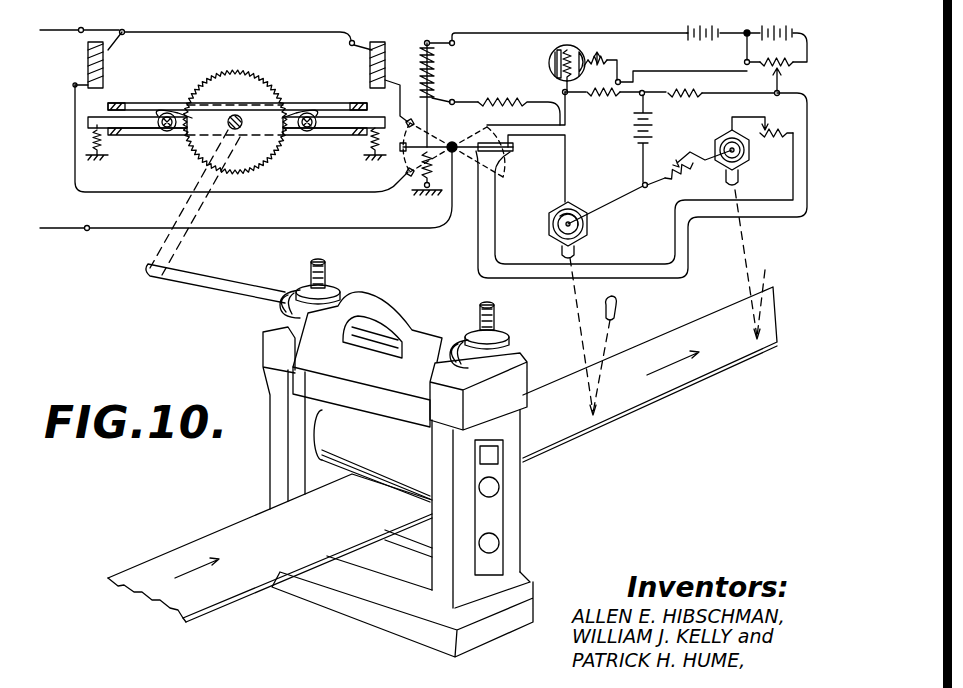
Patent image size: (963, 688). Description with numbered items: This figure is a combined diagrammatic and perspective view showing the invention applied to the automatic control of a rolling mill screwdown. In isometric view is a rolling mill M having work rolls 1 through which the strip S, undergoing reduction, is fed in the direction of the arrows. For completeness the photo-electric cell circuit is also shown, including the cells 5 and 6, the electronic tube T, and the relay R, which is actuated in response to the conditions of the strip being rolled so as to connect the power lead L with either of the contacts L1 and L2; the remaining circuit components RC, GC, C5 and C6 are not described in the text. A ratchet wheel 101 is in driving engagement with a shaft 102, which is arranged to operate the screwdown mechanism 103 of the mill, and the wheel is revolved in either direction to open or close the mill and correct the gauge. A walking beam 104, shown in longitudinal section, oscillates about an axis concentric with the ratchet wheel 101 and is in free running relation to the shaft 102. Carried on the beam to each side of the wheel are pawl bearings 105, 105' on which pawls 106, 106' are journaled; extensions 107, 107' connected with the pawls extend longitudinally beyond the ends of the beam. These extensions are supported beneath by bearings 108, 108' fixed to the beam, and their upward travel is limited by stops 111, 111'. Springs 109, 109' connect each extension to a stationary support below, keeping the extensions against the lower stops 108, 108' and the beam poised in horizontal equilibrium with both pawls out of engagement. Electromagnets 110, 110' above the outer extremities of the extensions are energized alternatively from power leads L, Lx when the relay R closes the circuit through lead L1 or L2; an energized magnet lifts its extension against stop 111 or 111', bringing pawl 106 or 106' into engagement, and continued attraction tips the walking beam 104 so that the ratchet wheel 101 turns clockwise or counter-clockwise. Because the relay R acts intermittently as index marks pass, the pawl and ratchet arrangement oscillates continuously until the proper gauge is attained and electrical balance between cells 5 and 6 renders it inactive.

The power lead Lx is at (78, 34).
The power lead L is at (246, 203).
The electromagnet 110 is at (115, 60).
The electromagnet 110' is at (381, 69).
The walking beam 104 is at (183, 140).
The bearing or stop 111 is at (128, 96).
The bearing or stop 111' is at (348, 96).
The pawl extension 107 is at (137, 144).
The pawl extension 107' is at (334, 144).
The bearing 108 is at (191, 160).
The bearing 108' is at (325, 160).
The ratchet wheel 101 is at (240, 110).
The shaft 102 is at (238, 130).
The pawl bearing 105 is at (166, 97).
The pawl bearing 105' is at (314, 97).
The pawl 106 is at (186, 80).
The pawl 106' is at (293, 80).
The spring 109 is at (75, 142).
The spring 109' is at (354, 177).
The relay R is at (549, 106).
The contact L1 is at (424, 116).
The contact L2 is at (408, 178).
The electronic tube T is at (553, 55).
The resistance-capacity network RC is at (721, 61).
The grid battery GC is at (634, 104).
The variable capacitor C5 is at (596, 198).
The cell 5 is at (583, 240).
The variable capacitor C6 is at (720, 151).
The cell 6 is at (746, 166).
The rolling mill M is at (515, 512).
The screwdown mechanism 103 is at (338, 290).
The work rolls 1 is at (374, 440).
The strip S is at (225, 540).